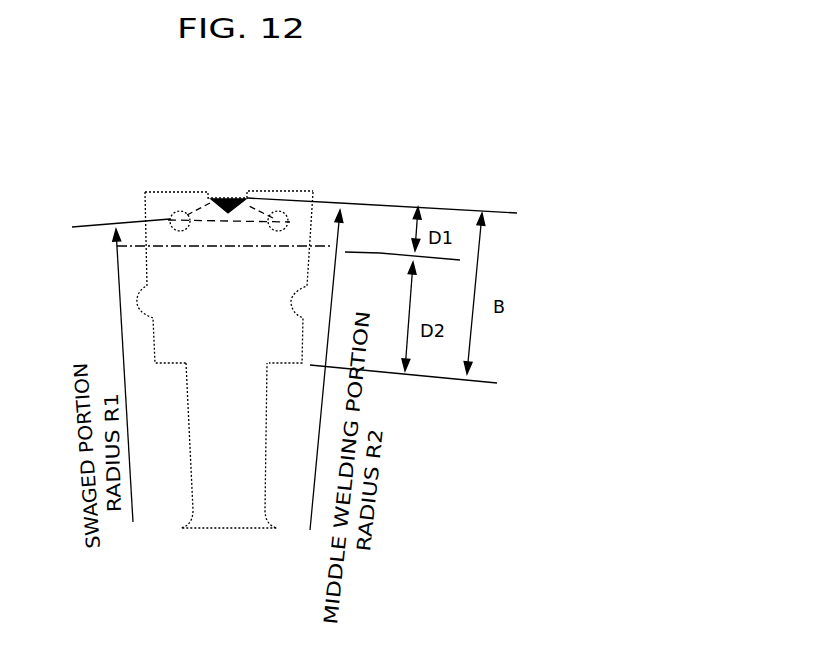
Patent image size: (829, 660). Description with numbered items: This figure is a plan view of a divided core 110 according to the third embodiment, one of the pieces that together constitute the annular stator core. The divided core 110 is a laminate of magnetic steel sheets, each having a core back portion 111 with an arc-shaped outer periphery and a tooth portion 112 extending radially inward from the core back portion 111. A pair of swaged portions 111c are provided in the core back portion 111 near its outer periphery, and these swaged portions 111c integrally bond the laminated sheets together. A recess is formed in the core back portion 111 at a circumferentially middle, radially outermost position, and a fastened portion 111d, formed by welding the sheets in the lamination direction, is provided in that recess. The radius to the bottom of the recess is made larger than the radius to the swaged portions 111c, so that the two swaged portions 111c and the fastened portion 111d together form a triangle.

The divided core 110 is at (96, 147).
The core back portion 111 is at (195, 268).
The swaged portions 111c is at (174, 214).
The fastened portion 111d is at (228, 198).
The tooth portion 112 is at (202, 483).